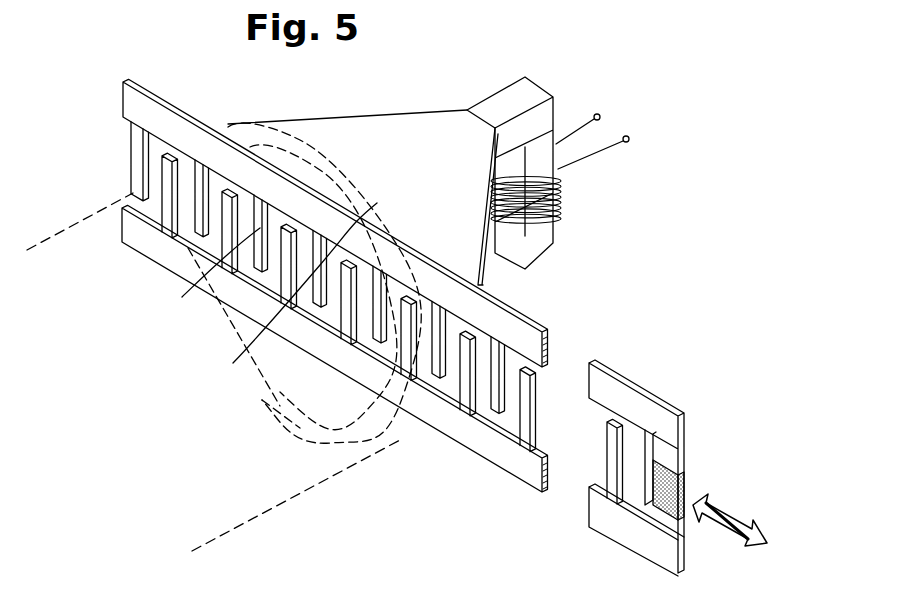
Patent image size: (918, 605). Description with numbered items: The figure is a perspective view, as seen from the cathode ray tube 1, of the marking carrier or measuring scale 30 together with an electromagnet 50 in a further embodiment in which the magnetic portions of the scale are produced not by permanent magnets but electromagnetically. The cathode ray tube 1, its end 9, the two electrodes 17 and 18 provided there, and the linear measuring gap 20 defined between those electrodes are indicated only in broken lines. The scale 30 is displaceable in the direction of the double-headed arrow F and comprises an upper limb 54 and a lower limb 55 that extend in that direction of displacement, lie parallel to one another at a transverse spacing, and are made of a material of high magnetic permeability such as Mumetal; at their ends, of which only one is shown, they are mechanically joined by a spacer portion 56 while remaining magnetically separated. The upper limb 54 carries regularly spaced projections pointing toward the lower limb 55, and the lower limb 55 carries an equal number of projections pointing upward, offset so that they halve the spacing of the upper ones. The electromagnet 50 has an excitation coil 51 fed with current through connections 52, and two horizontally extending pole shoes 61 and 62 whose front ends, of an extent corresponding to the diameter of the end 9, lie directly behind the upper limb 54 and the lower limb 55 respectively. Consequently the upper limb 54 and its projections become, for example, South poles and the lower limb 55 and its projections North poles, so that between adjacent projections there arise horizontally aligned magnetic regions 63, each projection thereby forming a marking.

The cathode ray tube 1 is at (261, 500).
The end of the cathode ray tube 9 is at (267, 128).
The electrode 17 is at (326, 173).
The electrode 18 is at (266, 399).
The linear measuring gap 20 is at (211, 306).
The measuring scale 30 is at (619, 454).
The electromagnet 50 is at (442, 182).
The excitation coil 51 is at (562, 190).
The connections 52 is at (628, 135).
The upper limb 54 is at (170, 118).
The lower limb 55 is at (500, 456).
The spacer portion 56 is at (670, 513).
The pole shoe 61 is at (389, 130).
The pole shoe 62 is at (497, 285).
The magnetic regions 63 is at (345, 355).
The direction of displacement F is at (730, 527).